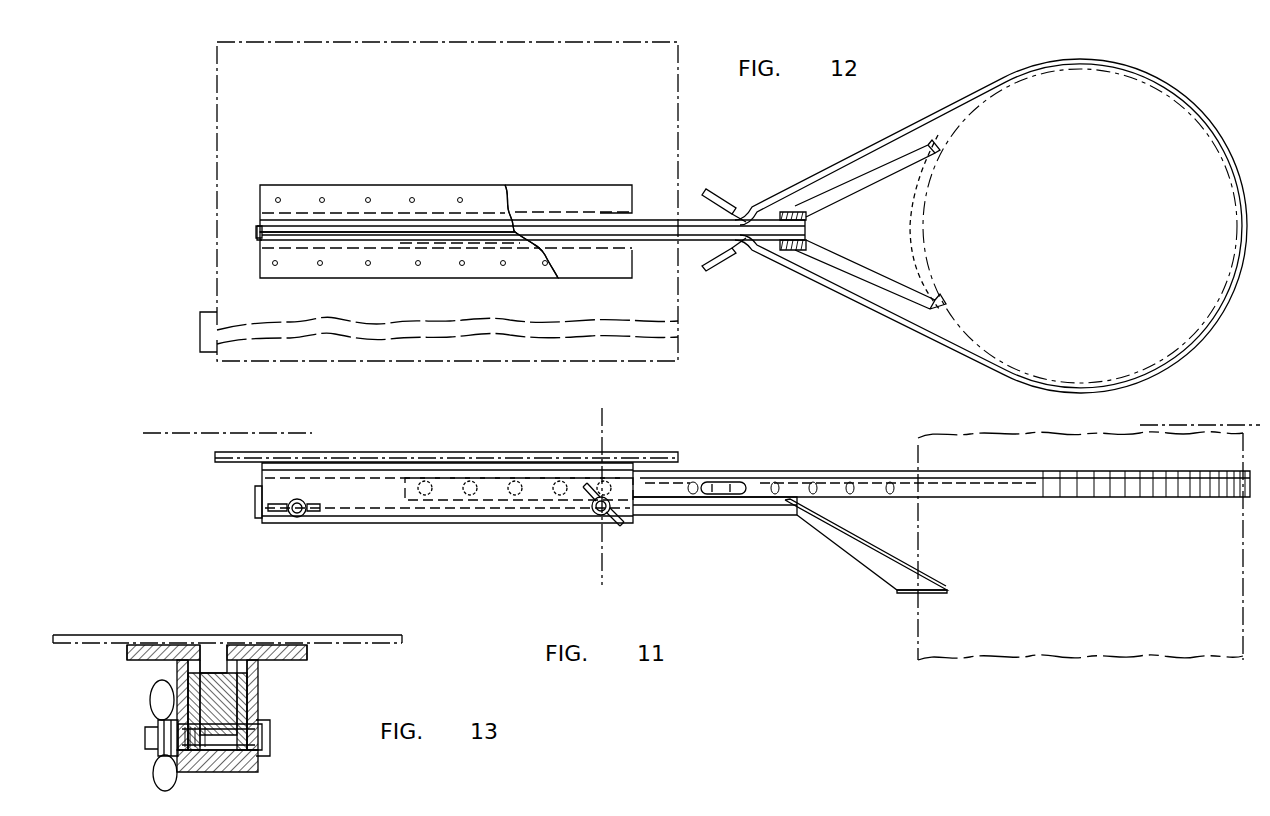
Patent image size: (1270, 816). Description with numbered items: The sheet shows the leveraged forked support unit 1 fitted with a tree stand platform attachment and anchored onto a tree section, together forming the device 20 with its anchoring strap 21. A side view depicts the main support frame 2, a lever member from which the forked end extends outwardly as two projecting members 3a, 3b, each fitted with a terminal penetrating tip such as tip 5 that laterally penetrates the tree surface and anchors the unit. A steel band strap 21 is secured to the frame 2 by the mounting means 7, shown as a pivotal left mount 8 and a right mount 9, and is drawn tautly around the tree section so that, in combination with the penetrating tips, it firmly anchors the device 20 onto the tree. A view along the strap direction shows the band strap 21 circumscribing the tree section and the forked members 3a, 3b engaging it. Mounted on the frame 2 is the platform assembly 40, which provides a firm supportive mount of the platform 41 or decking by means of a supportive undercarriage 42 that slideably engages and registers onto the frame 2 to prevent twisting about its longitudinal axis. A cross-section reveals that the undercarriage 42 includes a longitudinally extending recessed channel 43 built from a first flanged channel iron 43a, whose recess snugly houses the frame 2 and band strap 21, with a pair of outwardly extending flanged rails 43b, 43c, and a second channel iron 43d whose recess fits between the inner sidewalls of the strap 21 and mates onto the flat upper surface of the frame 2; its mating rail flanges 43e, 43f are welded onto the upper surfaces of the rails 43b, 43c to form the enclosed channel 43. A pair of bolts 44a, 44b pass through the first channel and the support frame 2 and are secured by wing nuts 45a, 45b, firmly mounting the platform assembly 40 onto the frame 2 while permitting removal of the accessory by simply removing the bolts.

In FIG. 11, the forked support unit 1 is at (770, 520).
In FIG. 11, the main support frame 2 is at (257, 500).
In FIG. 13, the main support frame 2 is at (235, 772).
In FIG. 12, the forked end member 3a is at (878, 290).
In FIG. 11, the forked end member 3a is at (878, 558).
In FIG. 12, the forked end member 3b is at (865, 185).
In FIG. 11, the terminal penetrating tip 5 is at (907, 595).
In FIG. 12, the mounting means 7 is at (707, 187).
In FIG. 11, the mounting means 7 is at (728, 495).
In FIG. 12, the pivotal left mount 8 is at (727, 205).
In FIG. 12, the right mount 9 is at (728, 262).
In FIG. 11, the right mount 9 is at (720, 483).
In FIG. 11, the device 20 is at (797, 525).
In FIG. 12, the anchoring strap 21 is at (862, 155).
In FIG. 11, the anchoring strap 21 is at (866, 480).
In FIG. 13, the anchoring strap 21 is at (180, 683).
In FIG. 11, the platform assembly 40 is at (473, 527).
In FIG. 13, the platform assembly 40 is at (130, 628).
In FIG. 12, the platform 41 is at (215, 150).
In FIG. 11, the platform 41 is at (466, 452).
In FIG. 13, the platform 41 is at (348, 630).
In FIG. 13, the supportive undercarriage 42 is at (262, 707).
In FIG. 13, the recessed channel 43 is at (258, 693).
In FIG. 13, the first flanged channel iron 43a is at (250, 762).
In FIG. 12, the flanged rail 43b is at (438, 268).
In FIG. 13, the flanged rail 43b is at (170, 644).
In FIG. 12, the flanged rail 43c is at (386, 190).
In FIG. 13, the flanged rail 43c is at (280, 644).
In FIG. 12, the second longitudinally extending channel iron 43d is at (298, 232).
In FIG. 13, the second longitudinally extending channel iron 43d is at (215, 645).
In FIG. 12, the mating rail flange 43e is at (596, 270).
In FIG. 13, the mating rail flange 43e is at (130, 660).
In FIG. 12, the mating rail flange 43f is at (565, 188).
In FIG. 13, the mating rail flange 43f is at (290, 660).
In FIG. 11, the bolt 44a is at (292, 522).
In FIG. 11, the bolt 44b is at (594, 518).
In FIG. 13, the bolt 44b is at (146, 736).
In FIG. 11, the wing nut 45a is at (320, 515).
In FIG. 11, the wing nut 45b is at (620, 518).
In FIG. 13, the wing nut 45b is at (158, 768).